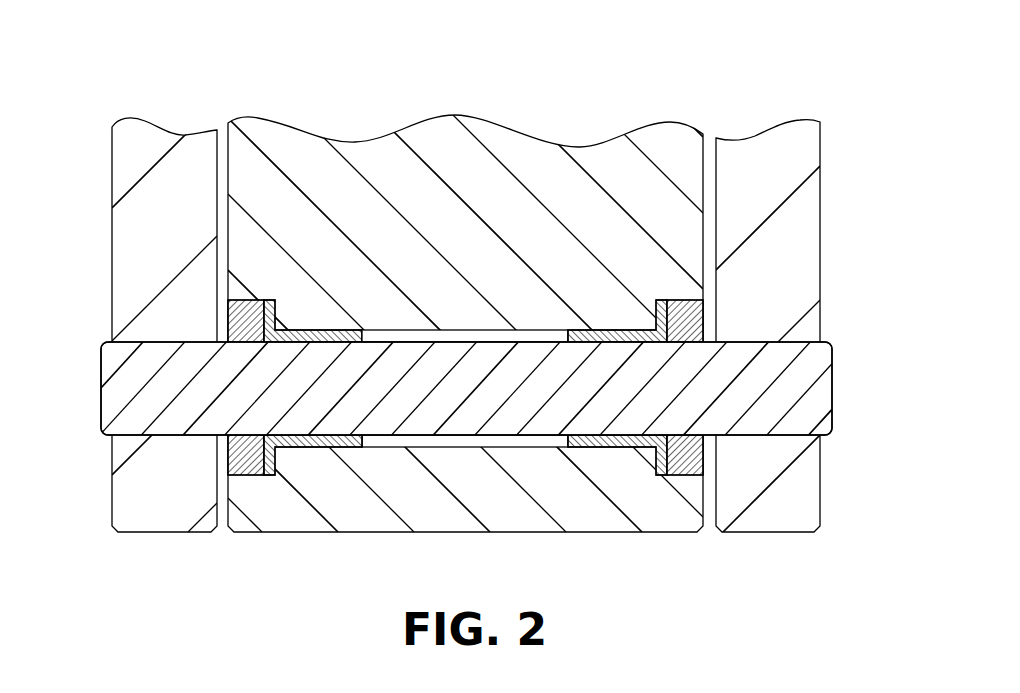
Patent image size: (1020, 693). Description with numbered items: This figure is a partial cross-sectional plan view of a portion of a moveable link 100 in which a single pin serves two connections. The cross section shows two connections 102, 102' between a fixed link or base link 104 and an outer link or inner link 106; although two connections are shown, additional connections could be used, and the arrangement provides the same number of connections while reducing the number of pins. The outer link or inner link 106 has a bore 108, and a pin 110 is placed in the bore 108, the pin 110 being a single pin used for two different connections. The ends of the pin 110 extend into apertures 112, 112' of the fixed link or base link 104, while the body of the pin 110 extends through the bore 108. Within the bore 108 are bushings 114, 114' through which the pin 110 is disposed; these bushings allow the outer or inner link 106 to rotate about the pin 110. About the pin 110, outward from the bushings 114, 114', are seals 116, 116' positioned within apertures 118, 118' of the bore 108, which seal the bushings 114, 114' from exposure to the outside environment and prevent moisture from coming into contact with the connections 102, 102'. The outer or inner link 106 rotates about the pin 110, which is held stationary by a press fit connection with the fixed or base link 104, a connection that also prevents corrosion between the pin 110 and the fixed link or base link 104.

The moveable link 100 is at (826, 90).
The connection 102 is at (643, 278).
The connection 102' is at (277, 280).
The fixed link or base link 104 is at (800, 188).
The outer link or inner link 106 is at (610, 180).
The bore 108 is at (487, 330).
The pin 110 is at (817, 388).
The aperture 112 is at (795, 296).
The aperture 112' is at (141, 281).
The bushing 114 is at (607, 435).
The bushing 114' is at (340, 287).
The seal 116 is at (665, 510).
The seal 116' is at (257, 510).
The aperture 118 is at (692, 502).
The aperture 118' is at (246, 503).